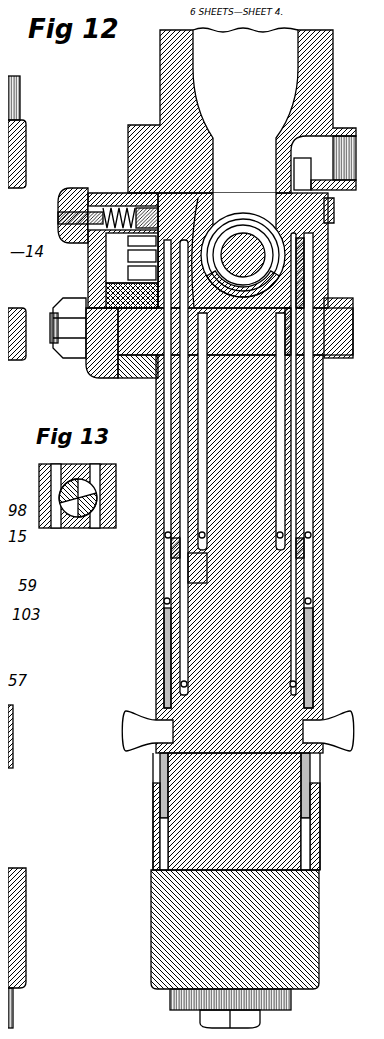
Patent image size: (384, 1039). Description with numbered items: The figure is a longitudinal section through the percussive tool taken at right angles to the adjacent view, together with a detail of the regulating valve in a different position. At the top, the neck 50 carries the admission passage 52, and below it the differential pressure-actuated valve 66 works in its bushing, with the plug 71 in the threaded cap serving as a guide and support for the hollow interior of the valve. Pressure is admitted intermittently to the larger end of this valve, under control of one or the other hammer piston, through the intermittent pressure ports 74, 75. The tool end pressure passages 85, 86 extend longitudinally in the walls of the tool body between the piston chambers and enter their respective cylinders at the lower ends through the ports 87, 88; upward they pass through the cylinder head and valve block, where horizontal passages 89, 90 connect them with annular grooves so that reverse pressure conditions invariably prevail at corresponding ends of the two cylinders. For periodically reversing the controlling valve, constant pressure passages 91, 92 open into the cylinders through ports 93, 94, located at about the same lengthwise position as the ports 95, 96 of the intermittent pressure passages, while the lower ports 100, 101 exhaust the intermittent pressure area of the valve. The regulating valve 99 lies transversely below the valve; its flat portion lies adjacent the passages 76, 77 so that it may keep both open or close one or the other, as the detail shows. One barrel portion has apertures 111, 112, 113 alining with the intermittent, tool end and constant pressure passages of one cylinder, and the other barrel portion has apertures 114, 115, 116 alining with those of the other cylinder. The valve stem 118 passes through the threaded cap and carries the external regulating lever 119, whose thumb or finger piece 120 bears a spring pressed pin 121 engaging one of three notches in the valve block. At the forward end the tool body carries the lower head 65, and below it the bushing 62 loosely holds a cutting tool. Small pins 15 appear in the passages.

In FIG. 12, the neck 50 is at (325, 30).
In FIG. 12, the admission passage 52 is at (236, 136).
In FIG. 12, the thumb or finger piece 120 is at (60, 184).
In FIG. 12, the spring pressed pin 121 is at (116, 186).
In FIG. 12, the horizontal passage 89 is at (200, 194).
In FIG. 12, the differential pressure-actuated valve 66 is at (226, 212).
In FIG. 12, the plug 71 is at (250, 212).
In FIG. 12, the horizontal passage 90 is at (320, 215).
In FIG. 12, the intermittent pressure port 74 is at (160, 387).
In FIG. 12, the aperture 113 is at (300, 262).
In FIG. 12, the aperture 112 is at (296, 292).
In FIG. 12, the aperture 111 is at (322, 300).
In FIG. 12, the external regulating lever 119 is at (90, 262).
In FIG. 12, the intermittent pressure port 75 is at (326, 381).
In FIG. 12, the aperture 116 is at (146, 250).
In FIG. 12, the aperture 115 is at (146, 262).
In FIG. 12, the aperture 114 is at (148, 286).
In FIG. 12, the valve stem 118 is at (90, 356).
In FIG. 12, the tool end pressure passage 86 is at (158, 405).
In FIG. 12, the tool end pressure passage 85 is at (298, 397).
In FIG. 12, the constant pressure passage 92 is at (192, 442).
In FIG. 12, the constant pressure passage 91 is at (270, 450).
In FIG. 12, the port 93 is at (303, 522).
In FIG. 12, the pin 15 is at (330, 527).
In FIG. 12, the port 95 is at (160, 534).
In FIG. 12, the port 96 is at (300, 532).
In FIG. 12, the port 94 is at (178, 548).
In FIG. 12, the port 100 is at (156, 593).
In FIG. 12, the port 101 is at (303, 593).
In FIG. 12, the port 88 is at (173, 676).
In FIG. 12, the port 87 is at (288, 676).
In FIG. 12, the lower head 65 is at (156, 890).
In FIG. 12, the bushing 62 is at (164, 963).
In FIG. 13, the passage 76 is at (50, 462).
In FIG. 13, the passage 77 is at (88, 470).
In FIG. 13, the regulating valve 99 is at (70, 520).